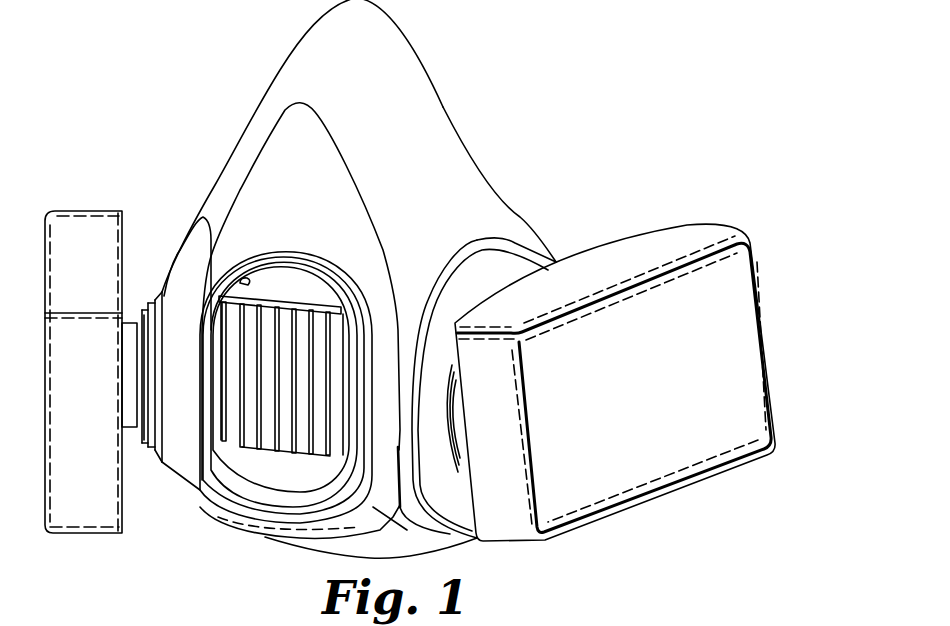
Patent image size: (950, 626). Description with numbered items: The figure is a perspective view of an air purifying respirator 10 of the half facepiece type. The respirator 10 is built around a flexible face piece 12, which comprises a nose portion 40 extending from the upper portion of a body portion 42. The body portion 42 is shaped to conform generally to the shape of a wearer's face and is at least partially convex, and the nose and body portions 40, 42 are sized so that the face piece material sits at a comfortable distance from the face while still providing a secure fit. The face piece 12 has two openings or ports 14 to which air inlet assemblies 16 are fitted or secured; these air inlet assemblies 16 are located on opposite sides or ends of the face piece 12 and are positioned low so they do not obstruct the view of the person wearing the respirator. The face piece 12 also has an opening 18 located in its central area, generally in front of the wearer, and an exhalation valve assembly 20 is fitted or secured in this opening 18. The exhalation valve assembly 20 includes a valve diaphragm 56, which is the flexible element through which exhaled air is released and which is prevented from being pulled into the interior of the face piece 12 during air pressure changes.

The air purifying respirator 10 is at (530, 75).
The face piece 12 is at (470, 172).
The port 14 is at (133, 375).
The air inlet assembly 16 is at (88, 212).
The opening 18 is at (243, 282).
The exhalation valve assembly 20 is at (265, 462).
The nose portion 40 is at (437, 115).
The body portion 42 is at (520, 230).
The valve diaphragm 56 is at (230, 425).